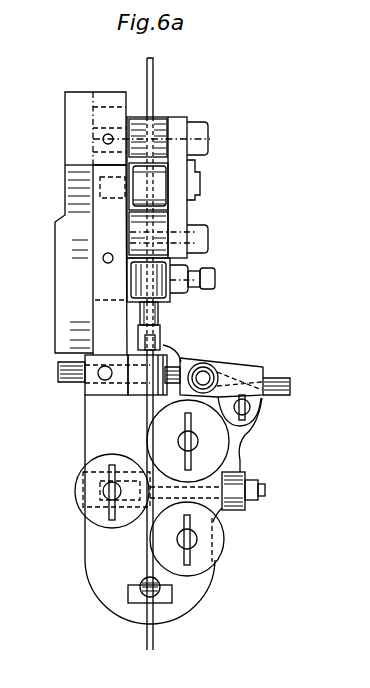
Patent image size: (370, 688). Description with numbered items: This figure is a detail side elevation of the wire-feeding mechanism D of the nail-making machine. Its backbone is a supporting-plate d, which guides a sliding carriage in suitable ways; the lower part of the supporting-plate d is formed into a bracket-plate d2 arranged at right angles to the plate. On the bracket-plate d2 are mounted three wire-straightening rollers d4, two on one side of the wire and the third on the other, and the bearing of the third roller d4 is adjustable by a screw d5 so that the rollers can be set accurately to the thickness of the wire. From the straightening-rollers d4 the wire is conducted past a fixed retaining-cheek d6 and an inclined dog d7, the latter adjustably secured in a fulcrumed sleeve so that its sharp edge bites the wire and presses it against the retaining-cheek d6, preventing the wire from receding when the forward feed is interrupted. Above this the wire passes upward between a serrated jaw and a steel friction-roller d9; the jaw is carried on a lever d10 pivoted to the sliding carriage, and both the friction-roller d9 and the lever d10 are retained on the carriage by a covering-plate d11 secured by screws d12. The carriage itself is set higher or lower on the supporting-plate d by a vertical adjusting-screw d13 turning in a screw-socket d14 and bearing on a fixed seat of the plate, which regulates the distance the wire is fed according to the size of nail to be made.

The supporting-plate d is at (132, 223).
The steel friction-roller d9 is at (140, 116).
The lever d10 is at (148, 186).
The covering-plate d11 is at (187, 207).
The screws d12 is at (208, 137).
The vertical adjusting-screw d13 is at (163, 326).
The screw-socket d14 is at (129, 300).
The wire-feeding mechanism D is at (182, 239).
The inclined dog d7 is at (175, 363).
The fixed retaining-cheek d6 is at (133, 392).
The wire-straightening rollers d4 is at (144, 501).
The bracket-plate d2 is at (176, 509).
The screw d5 is at (218, 491).